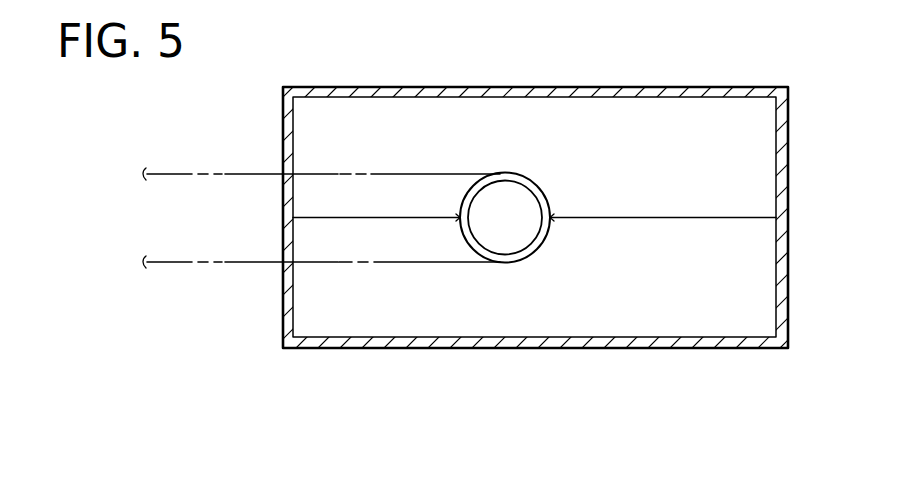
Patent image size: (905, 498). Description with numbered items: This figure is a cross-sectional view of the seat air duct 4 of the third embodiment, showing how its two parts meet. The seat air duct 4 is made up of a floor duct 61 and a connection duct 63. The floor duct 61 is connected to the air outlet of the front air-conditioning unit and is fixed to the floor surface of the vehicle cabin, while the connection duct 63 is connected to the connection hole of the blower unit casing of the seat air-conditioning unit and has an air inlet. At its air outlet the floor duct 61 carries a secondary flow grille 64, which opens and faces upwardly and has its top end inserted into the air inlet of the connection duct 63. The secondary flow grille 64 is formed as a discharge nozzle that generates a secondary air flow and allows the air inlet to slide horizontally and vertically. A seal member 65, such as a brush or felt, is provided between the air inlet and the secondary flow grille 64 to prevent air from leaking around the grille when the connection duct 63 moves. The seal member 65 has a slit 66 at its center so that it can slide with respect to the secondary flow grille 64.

The seat air duct 4 is at (737, 391).
The floor duct 61 is at (173, 172).
The connection duct 63 is at (455, 93).
The secondary flow grille 64 is at (540, 186).
The seal member 65 is at (752, 150).
The slit 66 is at (753, 217).